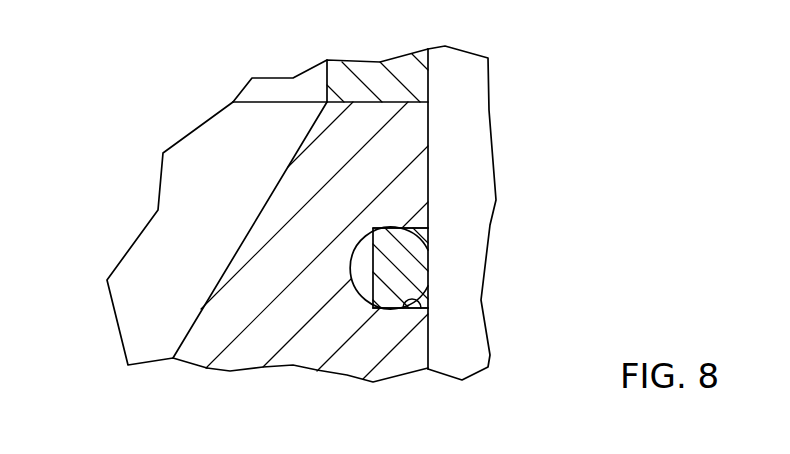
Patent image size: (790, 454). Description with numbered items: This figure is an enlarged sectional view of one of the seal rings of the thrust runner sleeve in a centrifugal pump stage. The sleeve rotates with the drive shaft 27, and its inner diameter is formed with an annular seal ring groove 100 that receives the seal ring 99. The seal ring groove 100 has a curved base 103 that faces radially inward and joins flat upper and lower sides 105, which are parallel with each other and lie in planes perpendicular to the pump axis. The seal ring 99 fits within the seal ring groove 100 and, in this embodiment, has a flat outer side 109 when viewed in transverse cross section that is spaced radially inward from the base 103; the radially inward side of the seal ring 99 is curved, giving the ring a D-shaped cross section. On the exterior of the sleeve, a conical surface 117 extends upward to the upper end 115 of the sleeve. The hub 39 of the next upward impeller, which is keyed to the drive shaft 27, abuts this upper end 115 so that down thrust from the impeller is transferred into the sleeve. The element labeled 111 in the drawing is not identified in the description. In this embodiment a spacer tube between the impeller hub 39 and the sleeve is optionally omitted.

The drive shaft 27 is at (478, 115).
The hub 39 is at (336, 78).
The upper end 115 is at (363, 102).
The conical surface 117 is at (182, 340).
The flat outer side 109 is at (350, 250).
The curved base 103 is at (352, 298).
The seal ring 99 is at (428, 278).
The upper and lower sides 105 is at (428, 240).
The second groove wall 111 is at (428, 303).
The seal ring groove 100 is at (410, 293).